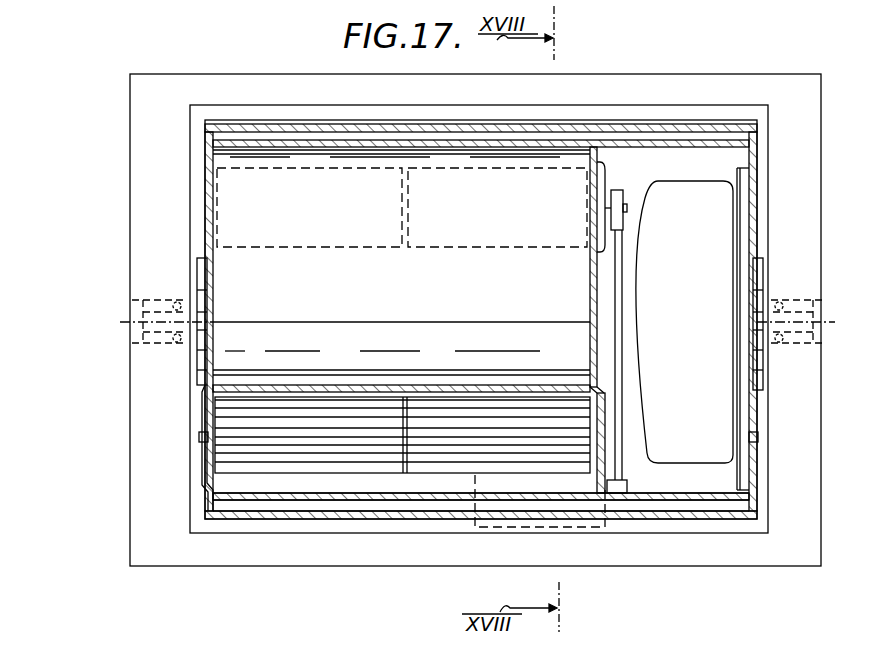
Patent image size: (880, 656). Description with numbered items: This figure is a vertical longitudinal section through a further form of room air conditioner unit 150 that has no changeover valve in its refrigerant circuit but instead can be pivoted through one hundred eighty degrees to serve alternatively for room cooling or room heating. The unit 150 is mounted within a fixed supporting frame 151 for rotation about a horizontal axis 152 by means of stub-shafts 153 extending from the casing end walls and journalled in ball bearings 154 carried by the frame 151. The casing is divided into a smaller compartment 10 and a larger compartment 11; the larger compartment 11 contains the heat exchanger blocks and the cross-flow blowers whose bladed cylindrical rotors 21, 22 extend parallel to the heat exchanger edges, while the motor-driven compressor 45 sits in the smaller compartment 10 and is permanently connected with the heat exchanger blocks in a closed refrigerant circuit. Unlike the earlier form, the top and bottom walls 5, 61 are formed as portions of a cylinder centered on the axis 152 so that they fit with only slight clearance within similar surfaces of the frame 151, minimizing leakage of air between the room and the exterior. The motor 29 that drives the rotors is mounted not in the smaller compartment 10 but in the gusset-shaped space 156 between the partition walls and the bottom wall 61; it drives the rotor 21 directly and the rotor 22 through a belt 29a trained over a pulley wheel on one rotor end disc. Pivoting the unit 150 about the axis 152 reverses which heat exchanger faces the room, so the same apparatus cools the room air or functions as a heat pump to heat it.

The top wall 5 is at (473, 128).
The smaller compartment 10 is at (670, 485).
The larger compartment 11 is at (416, 488).
The bladed cylindrical rotor 21 is at (273, 188).
The bladed cylindrical rotor 22 is at (338, 465).
The motor 29 is at (585, 530).
The belt 29a is at (613, 293).
The motor-driven compressor 45 is at (698, 302).
The bottom wall 61 is at (352, 515).
The unit 150 is at (731, 122).
The supporting frame 151 is at (645, 92).
The horizontal axis 152 is at (165, 326).
The stub-shafts 153 is at (191, 302).
The ball bearings 154 is at (152, 300).
The gusset-shaped space 156 is at (468, 507).